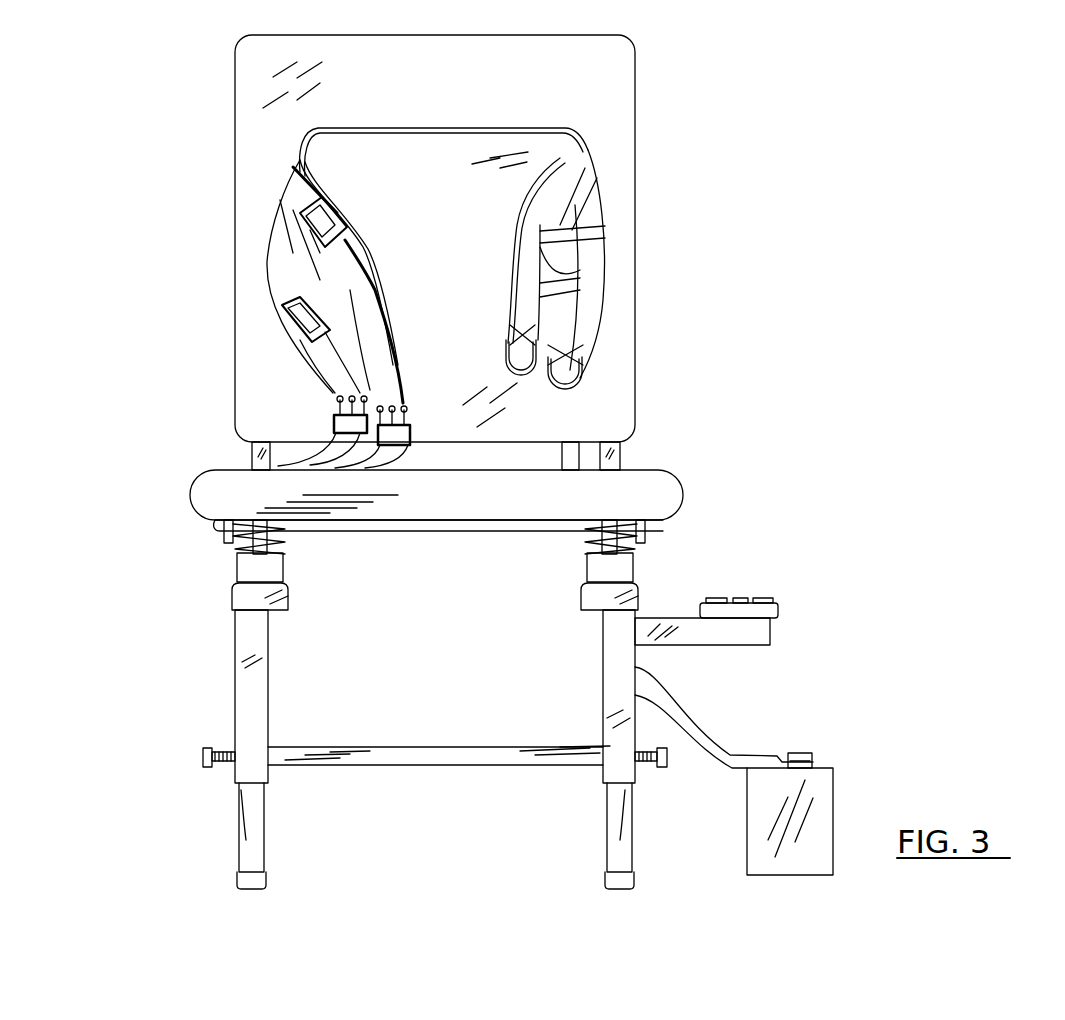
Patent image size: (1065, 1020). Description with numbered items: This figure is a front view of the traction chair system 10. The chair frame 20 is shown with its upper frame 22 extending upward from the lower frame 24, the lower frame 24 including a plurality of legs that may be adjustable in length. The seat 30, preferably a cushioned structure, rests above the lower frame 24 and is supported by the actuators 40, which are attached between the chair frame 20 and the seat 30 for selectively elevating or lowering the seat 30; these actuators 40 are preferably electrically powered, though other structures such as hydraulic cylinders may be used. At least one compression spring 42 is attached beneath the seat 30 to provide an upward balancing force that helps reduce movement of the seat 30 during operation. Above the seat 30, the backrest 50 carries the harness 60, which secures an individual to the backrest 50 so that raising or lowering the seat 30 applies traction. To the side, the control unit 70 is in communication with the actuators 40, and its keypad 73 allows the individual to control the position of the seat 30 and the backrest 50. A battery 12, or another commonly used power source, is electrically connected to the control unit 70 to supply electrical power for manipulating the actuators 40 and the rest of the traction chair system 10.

The traction chair system 10 is at (940, 128).
The battery 12 is at (828, 788).
The chair frame 20 is at (235, 698).
The upper frame 22 is at (258, 463).
The lower frame 24 is at (625, 650).
The seat 30 is at (665, 490).
The actuators 40 is at (237, 543).
The compression spring 42 is at (242, 553).
The backrest 50 is at (622, 397).
The harness 60 is at (290, 252).
The control unit 70 is at (775, 610).
The keypad 73 is at (765, 599).